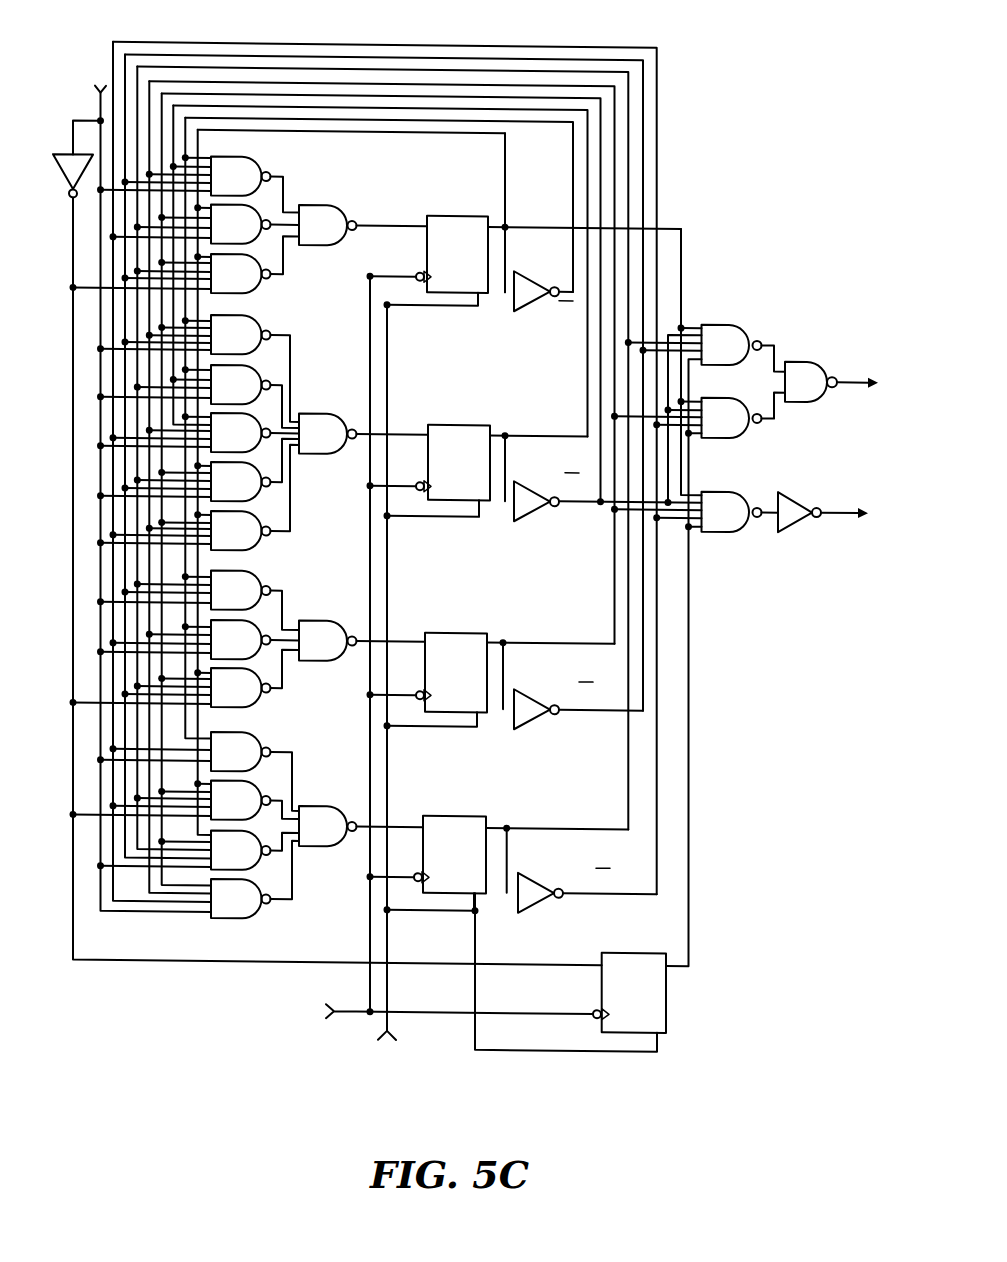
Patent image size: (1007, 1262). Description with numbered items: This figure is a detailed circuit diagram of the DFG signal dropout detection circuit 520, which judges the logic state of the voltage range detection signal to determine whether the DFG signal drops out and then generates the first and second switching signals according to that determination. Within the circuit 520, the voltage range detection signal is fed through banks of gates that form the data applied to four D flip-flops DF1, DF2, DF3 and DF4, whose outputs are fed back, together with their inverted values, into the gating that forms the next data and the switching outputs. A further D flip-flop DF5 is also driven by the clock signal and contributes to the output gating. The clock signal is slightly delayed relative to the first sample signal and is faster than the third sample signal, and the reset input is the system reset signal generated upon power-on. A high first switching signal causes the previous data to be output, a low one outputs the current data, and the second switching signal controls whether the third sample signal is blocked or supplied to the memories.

The DFG signal dropout detection circuit 520 is at (722, 97).
The D flip-flop DF1 is at (456, 215).
The D flip-flop DF2 is at (468, 424).
The D flip-flop DF3 is at (468, 632).
The D flip-flop DF4 is at (464, 815).
The D flip-flop DF5 is at (648, 950).